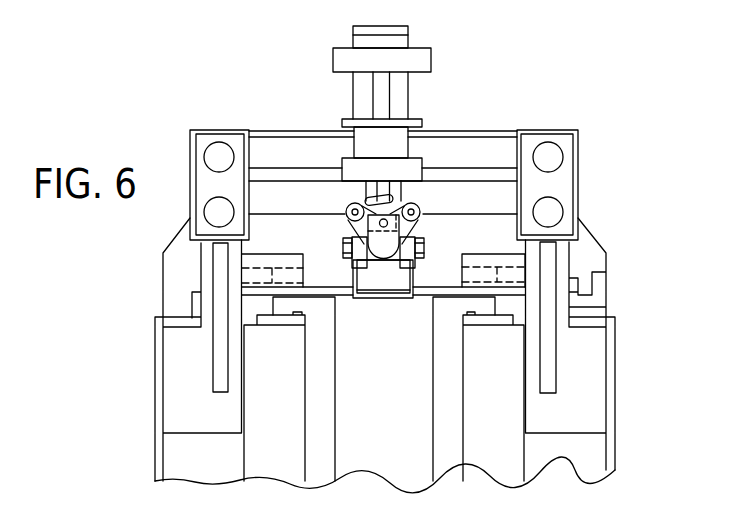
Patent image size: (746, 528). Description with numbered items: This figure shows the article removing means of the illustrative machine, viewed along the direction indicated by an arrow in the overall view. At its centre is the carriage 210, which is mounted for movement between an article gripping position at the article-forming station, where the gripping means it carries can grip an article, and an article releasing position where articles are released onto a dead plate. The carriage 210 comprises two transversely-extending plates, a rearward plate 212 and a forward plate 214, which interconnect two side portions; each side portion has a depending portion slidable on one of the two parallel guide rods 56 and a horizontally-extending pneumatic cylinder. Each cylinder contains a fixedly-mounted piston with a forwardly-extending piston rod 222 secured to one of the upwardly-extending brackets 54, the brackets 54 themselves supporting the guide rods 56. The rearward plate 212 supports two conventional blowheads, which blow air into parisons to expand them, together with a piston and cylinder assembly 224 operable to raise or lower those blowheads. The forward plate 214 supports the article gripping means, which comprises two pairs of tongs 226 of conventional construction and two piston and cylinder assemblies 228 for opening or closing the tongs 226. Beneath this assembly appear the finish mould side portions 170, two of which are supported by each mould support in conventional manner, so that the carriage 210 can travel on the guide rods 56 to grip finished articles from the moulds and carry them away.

The carriage 210 is at (250, 116).
The rearward plate 212 is at (313, 129).
The forward plate 214 is at (492, 174).
The piston rod 222 is at (212, 152).
The piston and cylinder assembly 224 is at (398, 39).
The tongs 226 is at (370, 300).
The piston and cylinder assembly 228 is at (397, 149).
The guide rod 56 is at (212, 210).
The bracket 54 is at (222, 345).
The finish mould side portion 170 is at (448, 402).